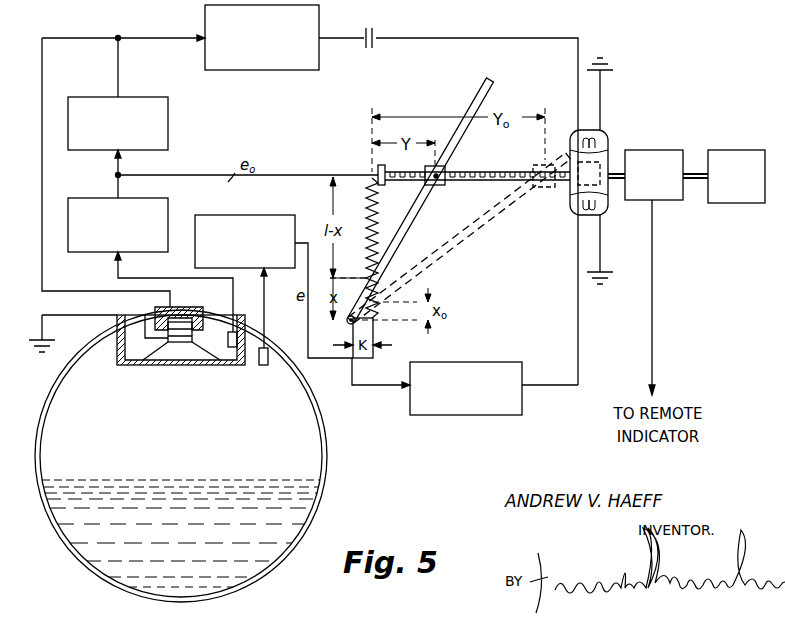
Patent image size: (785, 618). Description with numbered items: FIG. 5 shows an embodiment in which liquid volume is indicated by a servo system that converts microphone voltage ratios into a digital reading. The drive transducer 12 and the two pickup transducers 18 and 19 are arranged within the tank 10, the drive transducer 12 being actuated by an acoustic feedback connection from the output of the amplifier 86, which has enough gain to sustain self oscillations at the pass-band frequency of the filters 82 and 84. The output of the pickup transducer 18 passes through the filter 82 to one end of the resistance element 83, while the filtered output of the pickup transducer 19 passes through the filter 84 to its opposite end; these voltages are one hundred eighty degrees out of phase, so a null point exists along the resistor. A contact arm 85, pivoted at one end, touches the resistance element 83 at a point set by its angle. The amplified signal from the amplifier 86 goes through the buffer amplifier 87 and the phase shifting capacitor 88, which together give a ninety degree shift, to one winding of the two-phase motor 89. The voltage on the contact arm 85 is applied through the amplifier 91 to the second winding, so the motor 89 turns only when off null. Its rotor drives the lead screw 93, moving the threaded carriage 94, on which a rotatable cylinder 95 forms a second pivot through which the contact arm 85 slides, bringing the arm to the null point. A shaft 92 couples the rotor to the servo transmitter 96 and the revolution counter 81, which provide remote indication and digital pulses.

The tank 10 is at (327, 452).
The drive transducer 12 is at (208, 340).
The pickup transducer 18 is at (227, 348).
The pickup transducer 19 is at (268, 362).
The revolution counter 81 is at (758, 203).
The filter 82 is at (131, 198).
The resistance element 83 is at (367, 203).
The filter 84 is at (256, 215).
The contact arm 85 is at (407, 226).
The amplifier 86 is at (131, 97).
The buffer amplifier 87 is at (277, 72).
The phase shifting capacitor 88 is at (374, 34).
The two-phase motor 89 is at (604, 130).
The amplifier 91 is at (488, 362).
The shaft 92 is at (617, 182).
The lead screw 93 is at (477, 171).
The threaded carriage 94 is at (424, 184).
The rotatable cylinder 95 is at (444, 184).
The servo transmitter 96 is at (630, 150).